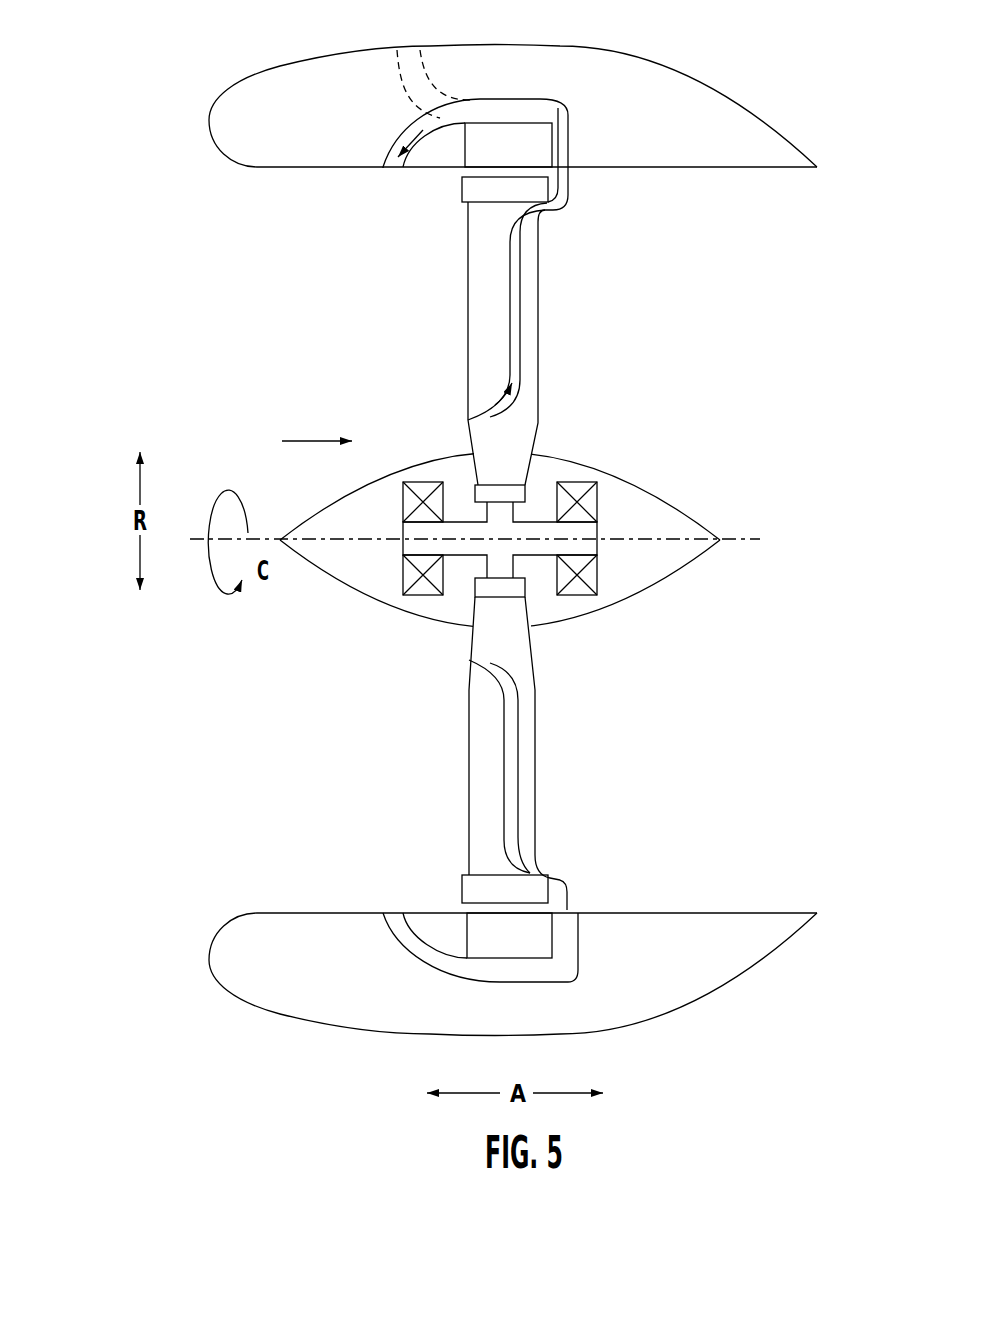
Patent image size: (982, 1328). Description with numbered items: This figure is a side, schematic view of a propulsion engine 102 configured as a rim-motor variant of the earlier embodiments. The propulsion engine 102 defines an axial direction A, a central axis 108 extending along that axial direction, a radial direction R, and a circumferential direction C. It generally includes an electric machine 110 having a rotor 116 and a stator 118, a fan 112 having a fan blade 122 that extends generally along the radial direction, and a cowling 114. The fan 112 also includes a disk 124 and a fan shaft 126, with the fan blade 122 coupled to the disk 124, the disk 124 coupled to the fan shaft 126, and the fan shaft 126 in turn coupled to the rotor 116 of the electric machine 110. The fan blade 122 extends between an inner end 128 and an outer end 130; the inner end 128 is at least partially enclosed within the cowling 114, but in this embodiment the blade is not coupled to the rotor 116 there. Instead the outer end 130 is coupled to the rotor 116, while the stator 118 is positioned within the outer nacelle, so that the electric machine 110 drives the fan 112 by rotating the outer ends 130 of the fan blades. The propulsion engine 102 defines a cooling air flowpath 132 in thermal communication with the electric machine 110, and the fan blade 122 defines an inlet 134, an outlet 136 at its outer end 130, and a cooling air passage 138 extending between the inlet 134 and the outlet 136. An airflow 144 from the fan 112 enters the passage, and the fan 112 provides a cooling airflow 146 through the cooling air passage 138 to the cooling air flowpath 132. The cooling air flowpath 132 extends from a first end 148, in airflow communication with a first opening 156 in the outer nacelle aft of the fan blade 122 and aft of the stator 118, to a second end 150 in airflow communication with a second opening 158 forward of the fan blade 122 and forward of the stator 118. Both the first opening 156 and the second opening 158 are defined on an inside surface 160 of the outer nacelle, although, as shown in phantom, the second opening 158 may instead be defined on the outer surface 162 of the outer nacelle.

The propulsion engine 102 is at (127, 72).
The central axis 108 is at (738, 536).
The electric machine 110 is at (446, 178).
The fan 112 is at (287, 336).
The cowling 114 is at (612, 463).
The rotor 116 is at (462, 200).
The stator 118 is at (483, 143).
The fan blade 122 is at (540, 328).
The disk 124 is at (473, 585).
The fan shaft 126 is at (588, 547).
The inner end 128 is at (544, 451).
The outer end 130 is at (459, 213).
The cooling air flowpath 132 is at (502, 97).
The inlet 134 is at (462, 431).
The outlet 136 is at (560, 196).
The cooling air passage 138 is at (521, 291).
The airflow 144 is at (318, 441).
The cooling airflow 146 is at (540, 109).
The first end 148 is at (569, 138).
The second end 150 is at (398, 132).
The first opening 156 is at (562, 158).
The second opening 158 is at (383, 178).
The inside surface 160 is at (718, 172).
The outer surface 162 is at (357, 46).